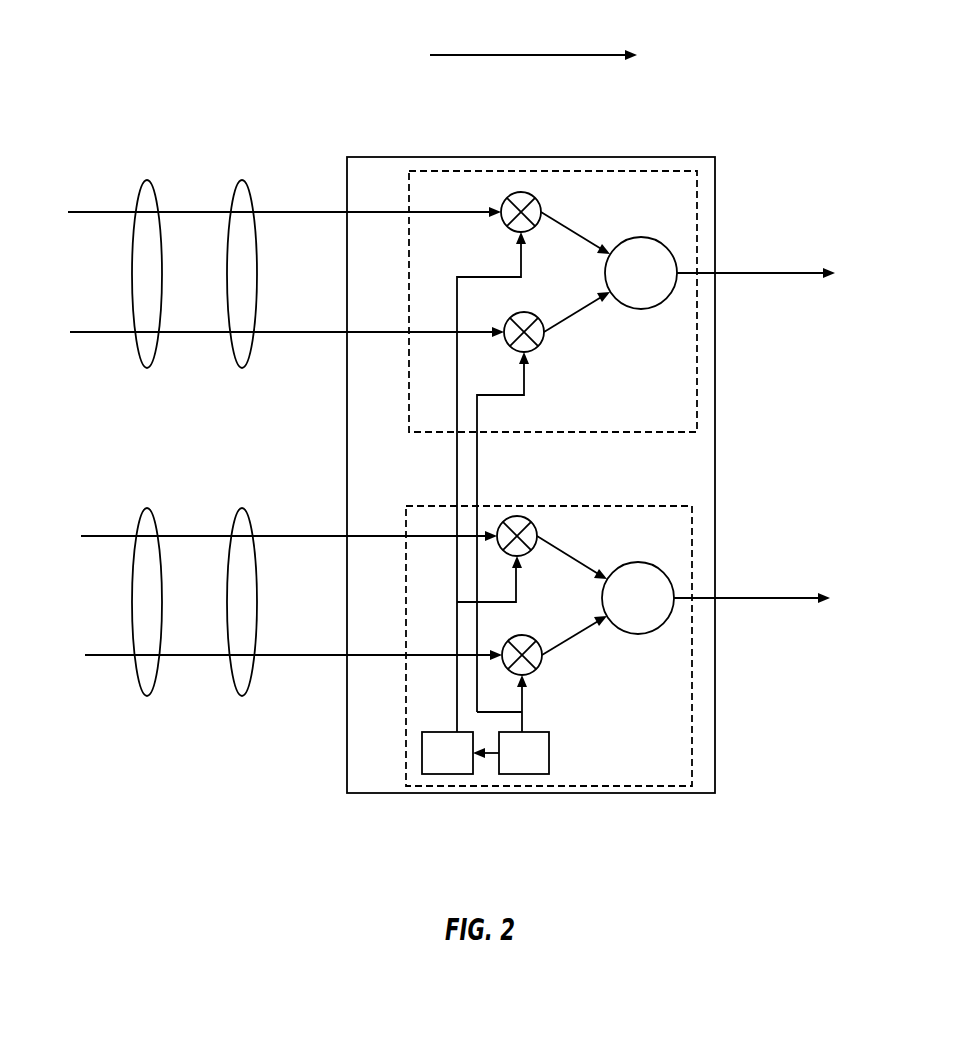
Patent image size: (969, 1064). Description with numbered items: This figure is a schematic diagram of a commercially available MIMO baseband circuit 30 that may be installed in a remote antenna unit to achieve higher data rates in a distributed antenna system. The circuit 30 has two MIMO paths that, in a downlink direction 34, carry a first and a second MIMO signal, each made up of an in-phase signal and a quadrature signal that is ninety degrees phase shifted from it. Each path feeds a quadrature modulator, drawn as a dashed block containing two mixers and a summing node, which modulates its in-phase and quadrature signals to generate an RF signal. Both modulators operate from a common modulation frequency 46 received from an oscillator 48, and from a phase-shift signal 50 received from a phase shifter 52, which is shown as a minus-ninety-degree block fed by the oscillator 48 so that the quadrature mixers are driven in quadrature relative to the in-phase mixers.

The MIMO baseband circuit 30 is at (665, 157).
The downlink direction 34 is at (530, 55).
The modulation frequency 46 is at (486, 454).
The oscillator 48 is at (522, 774).
The phase-shift signal 50 is at (489, 265).
The phase shifter 52 is at (445, 774).